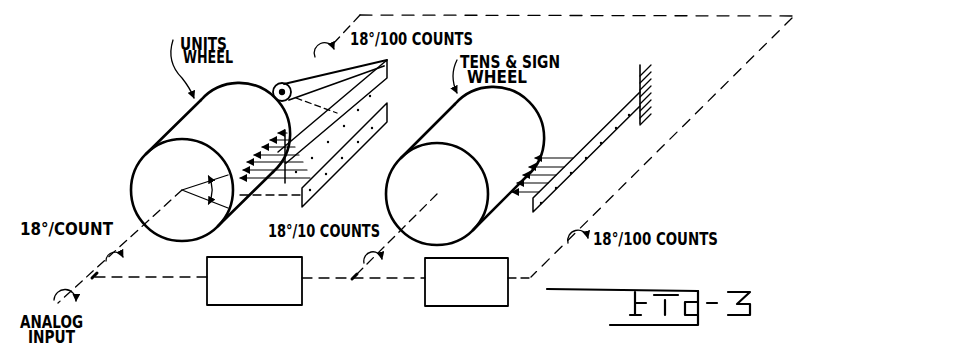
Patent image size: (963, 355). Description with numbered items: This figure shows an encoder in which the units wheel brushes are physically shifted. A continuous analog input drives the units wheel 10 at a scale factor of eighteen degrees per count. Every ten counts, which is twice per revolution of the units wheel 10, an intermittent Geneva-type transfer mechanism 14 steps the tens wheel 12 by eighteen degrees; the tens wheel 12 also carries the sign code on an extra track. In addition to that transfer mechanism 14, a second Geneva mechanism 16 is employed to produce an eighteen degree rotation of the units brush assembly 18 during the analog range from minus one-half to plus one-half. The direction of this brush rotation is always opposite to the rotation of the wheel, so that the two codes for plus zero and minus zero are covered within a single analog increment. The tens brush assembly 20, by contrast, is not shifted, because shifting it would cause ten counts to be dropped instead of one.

The units wheel 10 is at (172, 128).
The tens wheel 12 is at (448, 119).
The Geneva-type transfer mechanism 14 is at (302, 293).
The Geneva mechanism 16 is at (423, 294).
The units brush assembly 18 is at (322, 78).
The tens brush assembly 20 is at (613, 121).